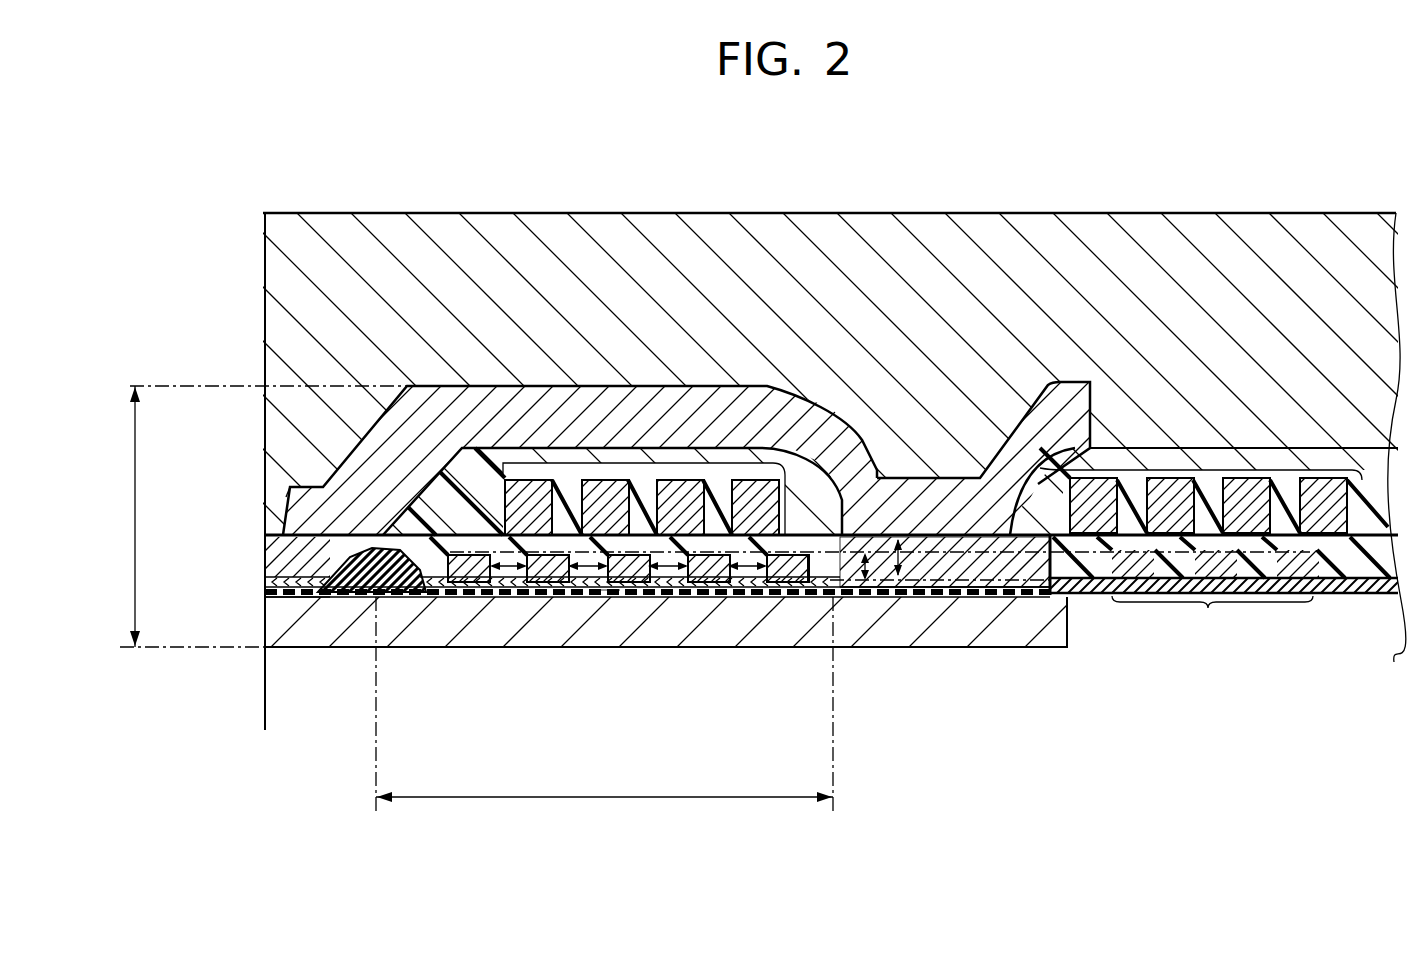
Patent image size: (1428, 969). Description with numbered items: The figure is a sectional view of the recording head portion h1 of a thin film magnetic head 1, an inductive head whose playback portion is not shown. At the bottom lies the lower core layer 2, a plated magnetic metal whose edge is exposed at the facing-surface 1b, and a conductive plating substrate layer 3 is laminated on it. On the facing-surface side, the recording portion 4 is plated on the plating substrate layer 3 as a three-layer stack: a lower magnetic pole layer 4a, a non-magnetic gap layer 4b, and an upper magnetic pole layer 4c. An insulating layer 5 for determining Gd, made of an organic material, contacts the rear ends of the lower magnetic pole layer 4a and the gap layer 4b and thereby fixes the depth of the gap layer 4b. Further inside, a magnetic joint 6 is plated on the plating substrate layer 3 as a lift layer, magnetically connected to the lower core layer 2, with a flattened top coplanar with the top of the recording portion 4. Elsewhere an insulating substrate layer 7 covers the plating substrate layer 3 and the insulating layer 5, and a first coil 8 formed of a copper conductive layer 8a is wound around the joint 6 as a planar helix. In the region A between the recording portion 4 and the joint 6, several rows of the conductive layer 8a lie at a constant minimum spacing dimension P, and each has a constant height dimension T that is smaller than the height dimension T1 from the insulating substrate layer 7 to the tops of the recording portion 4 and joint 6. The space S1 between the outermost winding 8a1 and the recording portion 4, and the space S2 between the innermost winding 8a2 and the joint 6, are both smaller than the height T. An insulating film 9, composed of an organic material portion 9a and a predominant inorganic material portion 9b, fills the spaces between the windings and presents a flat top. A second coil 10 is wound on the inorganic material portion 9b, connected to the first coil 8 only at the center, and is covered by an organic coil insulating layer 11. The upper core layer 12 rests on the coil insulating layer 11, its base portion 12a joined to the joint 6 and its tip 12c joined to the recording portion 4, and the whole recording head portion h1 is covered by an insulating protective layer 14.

The thin film magnetic head 1 is at (252, 686).
The facing-surface 1b is at (265, 724).
The lower core layer 2 is at (1034, 633).
The plating substrate layer 3 is at (300, 600).
The recording portion 4 is at (784, 573).
The lower magnetic pole layer 4a is at (628, 602).
The gap layer 4b is at (265, 582).
The upper magnetic pole layer 4c is at (265, 549).
The insulating layer for determining Gd 5 is at (358, 600).
The joint 6 is at (980, 567).
The insulating substrate layer 7 is at (600, 592).
The first coil 8 is at (620, 600).
The conductive layer 8a is at (655, 595).
The conductive layer of the outermost winding 8a1 is at (487, 555).
The conductive layer of the innermost winding 8a2 is at (790, 470).
The insulating film 9 is at (879, 618).
The organic material portion 9a is at (460, 584).
The inorganic material portion 9b is at (545, 584).
The second coil 10 is at (640, 470).
The coil insulating layer 11 is at (720, 455).
The upper core layer 12 is at (683, 354).
The base portion 12a is at (940, 500).
The tip 12c is at (270, 495).
The protective layer 14 is at (1040, 285).
The space between outermost winding and recording portion S1 is at (425, 585).
The space between innermost winding and joint S2 is at (825, 540).
The spacing dimension P is at (508, 572).
The height dimension of the conductive layer T is at (877, 597).
The height dimension to the top surfaces of the recording portion and joint T1 is at (927, 597).
The recording head portion h1 is at (252, 516).
The region between the joint and the recording portion A is at (604, 809).